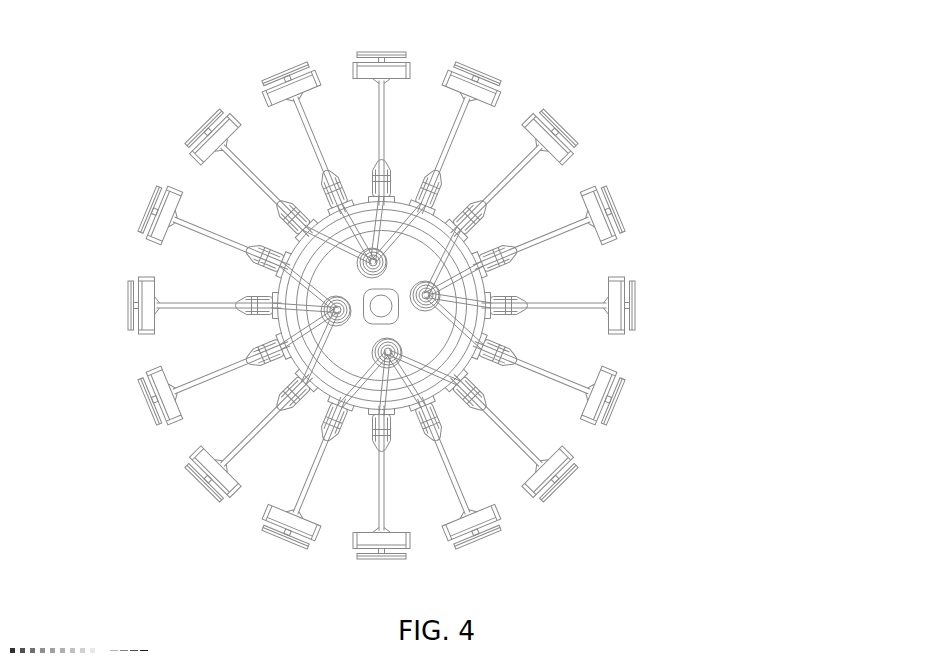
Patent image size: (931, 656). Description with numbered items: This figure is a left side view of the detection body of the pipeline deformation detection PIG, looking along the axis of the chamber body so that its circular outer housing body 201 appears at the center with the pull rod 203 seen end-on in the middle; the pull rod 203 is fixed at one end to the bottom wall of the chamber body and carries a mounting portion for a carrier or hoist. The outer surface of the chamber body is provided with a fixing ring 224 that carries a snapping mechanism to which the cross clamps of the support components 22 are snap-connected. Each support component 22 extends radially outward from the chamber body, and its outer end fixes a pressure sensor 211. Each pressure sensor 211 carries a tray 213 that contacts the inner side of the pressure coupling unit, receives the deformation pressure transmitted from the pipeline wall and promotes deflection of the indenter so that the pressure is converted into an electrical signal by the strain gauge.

The support component 22 is at (545, 235).
The outer housing body 201 is at (345, 353).
The pull rod 203 is at (391, 311).
The pressure sensor 211 is at (592, 212).
The tray 213 is at (631, 304).
The fixing ring 224 is at (293, 243).